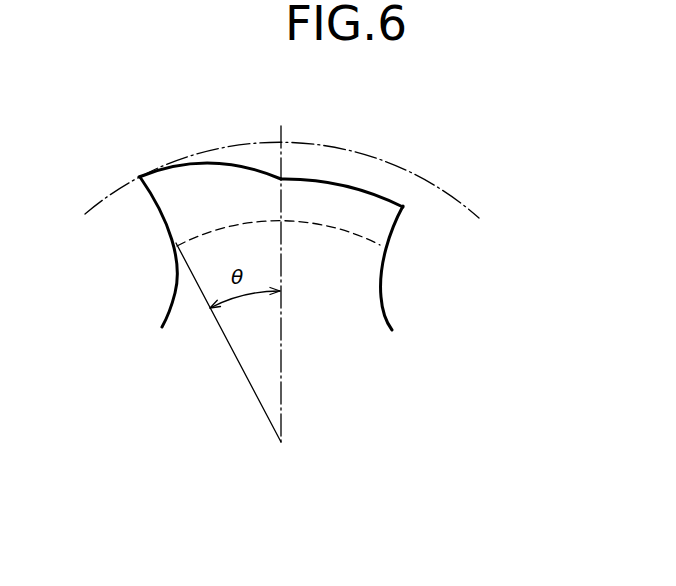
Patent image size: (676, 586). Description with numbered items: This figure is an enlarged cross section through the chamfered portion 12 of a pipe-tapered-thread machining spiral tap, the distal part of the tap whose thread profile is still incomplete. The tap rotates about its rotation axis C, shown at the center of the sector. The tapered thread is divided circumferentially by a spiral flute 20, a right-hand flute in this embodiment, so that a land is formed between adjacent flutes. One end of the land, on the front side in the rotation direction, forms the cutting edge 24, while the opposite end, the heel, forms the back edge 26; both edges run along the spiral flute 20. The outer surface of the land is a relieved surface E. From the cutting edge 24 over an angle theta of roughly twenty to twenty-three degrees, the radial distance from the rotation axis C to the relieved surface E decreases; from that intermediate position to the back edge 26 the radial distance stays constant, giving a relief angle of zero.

The chamfered portion 12 is at (489, 163).
The spiral flute 20 is at (168, 292).
The cutting edge 24 is at (138, 176).
The back edge 26 is at (407, 205).
The relieved surface E is at (218, 162).
The rotation axis C is at (281, 442).